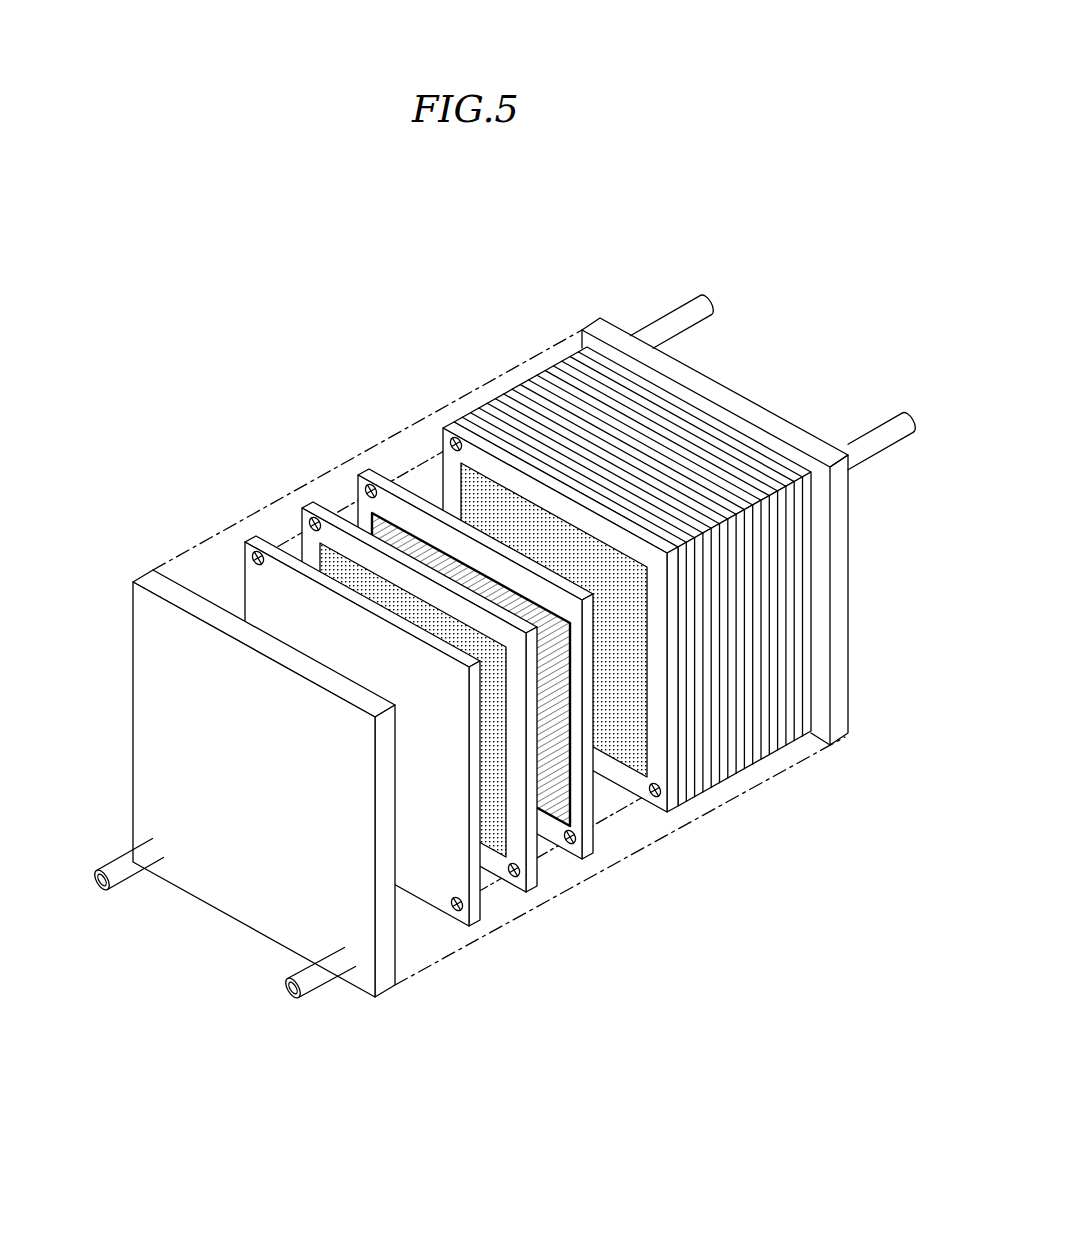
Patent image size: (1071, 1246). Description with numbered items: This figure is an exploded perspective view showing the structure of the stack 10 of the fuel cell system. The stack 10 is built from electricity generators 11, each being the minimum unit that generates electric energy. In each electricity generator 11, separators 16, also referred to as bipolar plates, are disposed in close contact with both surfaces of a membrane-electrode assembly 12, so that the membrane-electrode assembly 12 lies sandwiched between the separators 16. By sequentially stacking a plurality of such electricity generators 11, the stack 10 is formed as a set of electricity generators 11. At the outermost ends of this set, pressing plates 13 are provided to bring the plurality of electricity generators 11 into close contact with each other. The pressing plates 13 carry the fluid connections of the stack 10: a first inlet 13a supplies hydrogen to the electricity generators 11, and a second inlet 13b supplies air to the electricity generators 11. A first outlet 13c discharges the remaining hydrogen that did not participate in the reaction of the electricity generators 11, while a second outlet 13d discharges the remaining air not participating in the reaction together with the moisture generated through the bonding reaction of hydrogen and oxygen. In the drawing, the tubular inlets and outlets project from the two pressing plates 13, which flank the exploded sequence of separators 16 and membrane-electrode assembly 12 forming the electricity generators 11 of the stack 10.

The stack 10 is at (357, 320).
The electricity generator 11 is at (584, 637).
The membrane-electrode assembly 12 is at (670, 797).
The pressing plate 13 is at (387, 984).
The first inlet 13a is at (318, 990).
The second inlet 13b is at (890, 448).
The first outlet 13c is at (672, 309).
The second outlet 13d is at (113, 862).
The separator 16 is at (584, 633).